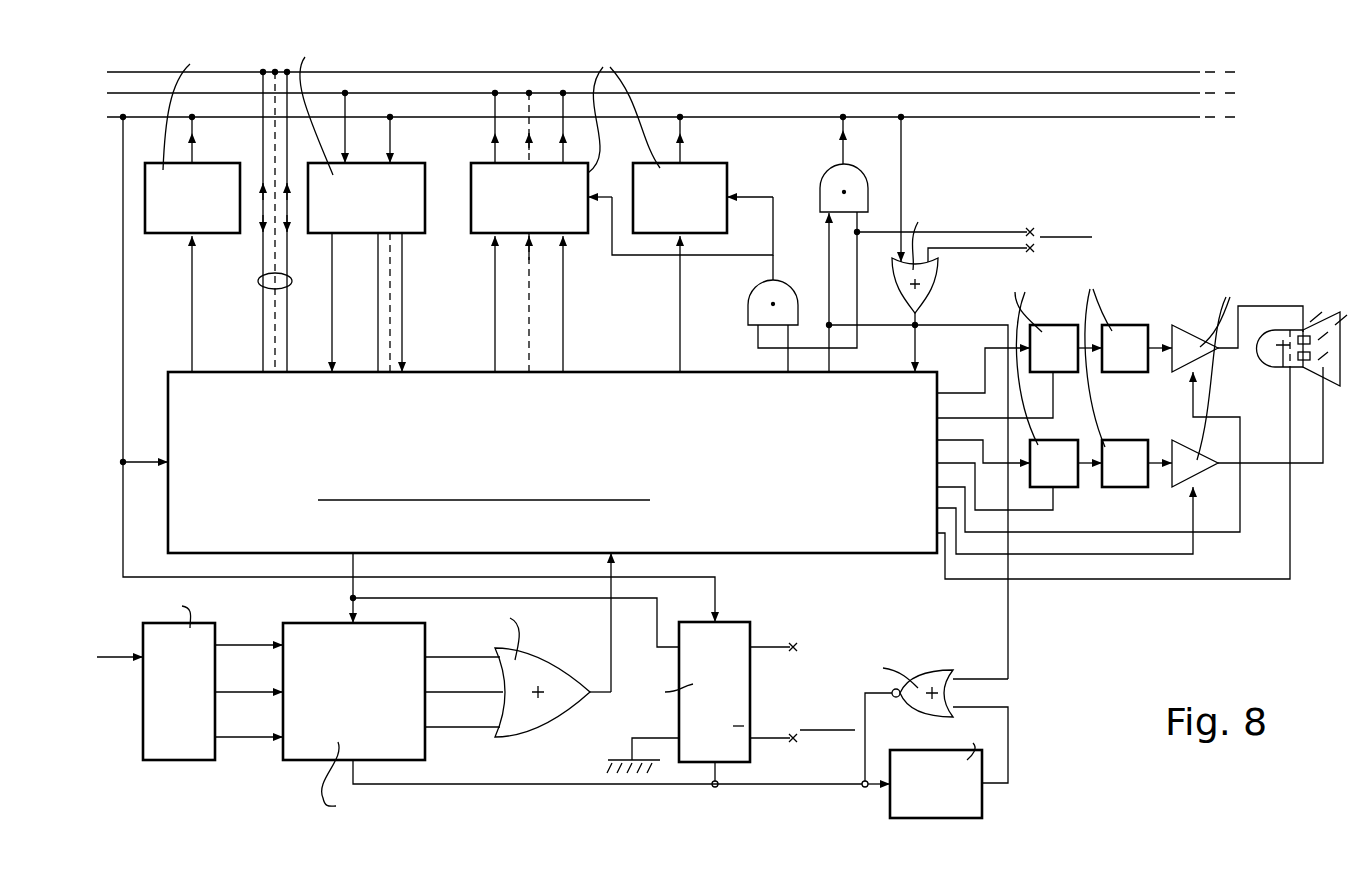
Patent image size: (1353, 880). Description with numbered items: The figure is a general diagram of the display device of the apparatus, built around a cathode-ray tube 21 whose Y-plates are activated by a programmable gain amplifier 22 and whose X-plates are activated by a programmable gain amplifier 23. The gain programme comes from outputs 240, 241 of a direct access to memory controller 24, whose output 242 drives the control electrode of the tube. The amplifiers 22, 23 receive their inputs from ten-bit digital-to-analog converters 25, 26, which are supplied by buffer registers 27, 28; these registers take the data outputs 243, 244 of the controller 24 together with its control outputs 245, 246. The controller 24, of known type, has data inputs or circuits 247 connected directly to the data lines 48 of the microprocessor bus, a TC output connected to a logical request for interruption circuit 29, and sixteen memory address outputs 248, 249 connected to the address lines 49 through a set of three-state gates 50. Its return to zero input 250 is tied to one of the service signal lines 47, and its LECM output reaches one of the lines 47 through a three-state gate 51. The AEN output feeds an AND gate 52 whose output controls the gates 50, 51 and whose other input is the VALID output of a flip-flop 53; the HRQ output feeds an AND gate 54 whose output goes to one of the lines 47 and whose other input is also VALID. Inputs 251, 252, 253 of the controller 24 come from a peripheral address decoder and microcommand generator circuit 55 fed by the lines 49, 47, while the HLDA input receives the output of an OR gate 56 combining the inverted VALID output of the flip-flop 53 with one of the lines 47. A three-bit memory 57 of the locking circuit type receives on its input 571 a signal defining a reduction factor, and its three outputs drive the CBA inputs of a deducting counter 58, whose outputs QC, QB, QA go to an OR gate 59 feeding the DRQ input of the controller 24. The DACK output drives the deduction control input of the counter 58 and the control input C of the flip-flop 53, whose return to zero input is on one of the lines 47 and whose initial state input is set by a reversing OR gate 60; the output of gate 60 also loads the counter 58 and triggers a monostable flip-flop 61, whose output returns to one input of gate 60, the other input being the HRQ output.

The cathode-ray tube 21 is at (1262, 360).
The programmable gain amplifier 22 is at (1207, 306).
The programmable gain amplifier 23 is at (1195, 440).
The direct access to memory controller 24 is at (574, 470).
The 10-bit digital-to-analog converter 25 is at (1147, 319).
The 10-bit digital-to-analog converter 26 is at (1102, 440).
The buffer register 27 is at (1073, 319).
The buffer register 28 is at (1052, 440).
The logical request for interruption circuit 29 is at (223, 163).
The service signal lines 47 is at (1067, 118).
The data lines 48 is at (1103, 62).
The address lines 49 is at (1125, 95).
The set of three-state gates 50 is at (572, 162).
The three-state gate 51 is at (722, 163).
The AND gate 52 is at (748, 302).
The flip-flop 53 is at (753, 627).
The AND gate 54 is at (780, 290).
The peripheral address decoder and microcommand generator circuit 55 is at (402, 163).
The OR gate 56 is at (938, 282).
The 3-bit memory 57 is at (185, 762).
The deducting counter 58 is at (312, 762).
The OR gate 59 is at (573, 640).
The reversing OR gate 60 is at (917, 690).
The monostable flip-flop 61 is at (965, 820).
The gain programme output 240 is at (1070, 452).
The gain programme output 241 is at (1046, 520).
The controller output 242 is at (1095, 473).
The data output 243 is at (965, 372).
The data output 244 is at (965, 447).
The control output 245 is at (976, 398).
The control output 246 is at (976, 482).
The data inputs or circuits 247 is at (274, 233).
The memory address outputs 248 is at (503, 314).
The memory address outputs 249 is at (560, 316).
The return to zero input 250 is at (418, 369).
The controller input 251 is at (333, 314).
The controller input 252 is at (373, 314).
The controller input 253 is at (406, 314).
The input of 3-bit memory 571 is at (164, 658).